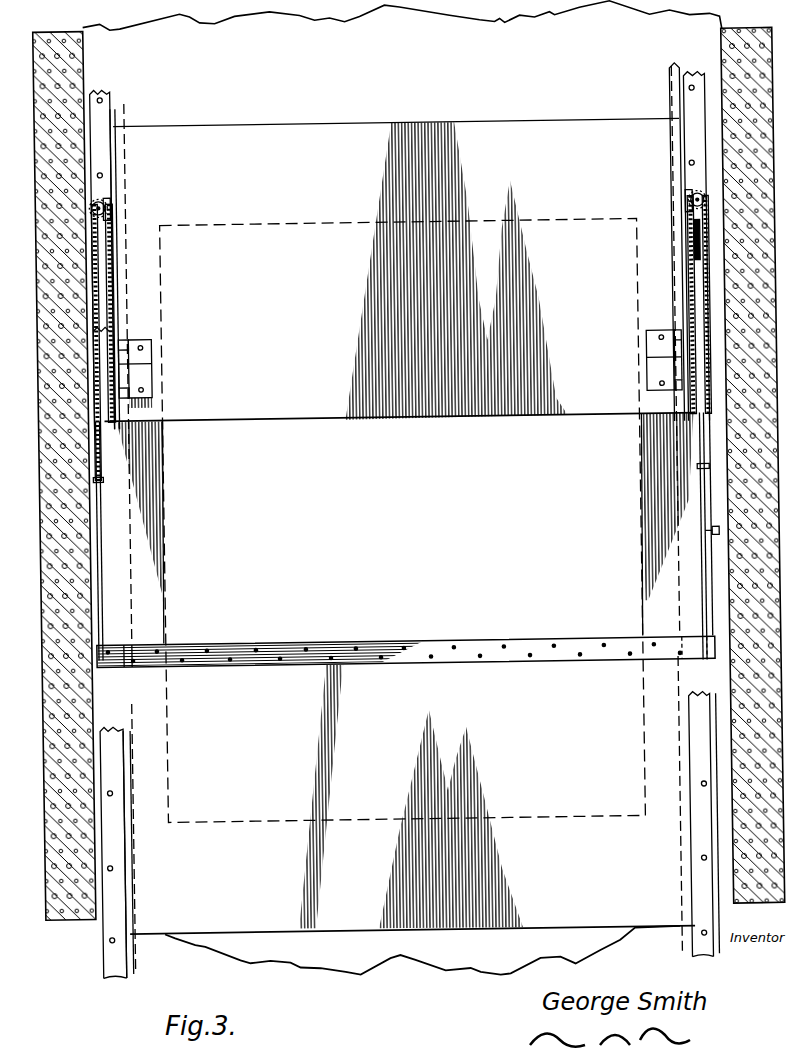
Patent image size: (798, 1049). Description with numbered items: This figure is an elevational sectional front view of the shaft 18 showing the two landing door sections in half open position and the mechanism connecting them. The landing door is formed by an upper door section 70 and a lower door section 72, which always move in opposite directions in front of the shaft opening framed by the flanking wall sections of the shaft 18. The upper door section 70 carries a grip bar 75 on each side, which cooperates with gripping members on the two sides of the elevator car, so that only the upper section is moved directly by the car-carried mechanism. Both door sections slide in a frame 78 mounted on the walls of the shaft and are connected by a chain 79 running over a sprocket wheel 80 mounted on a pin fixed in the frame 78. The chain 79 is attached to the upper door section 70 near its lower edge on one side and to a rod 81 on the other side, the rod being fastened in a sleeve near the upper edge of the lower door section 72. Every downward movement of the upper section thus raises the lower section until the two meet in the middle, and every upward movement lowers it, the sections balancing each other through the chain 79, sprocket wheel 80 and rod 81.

The shaft 18 is at (70, 912).
The upper door section 70 is at (271, 398).
The lower door section 72 is at (248, 672).
The grip bar 75 is at (131, 364).
The frame 78 is at (103, 116).
The chain 79 is at (113, 272).
The sprocket wheel 80 is at (104, 208).
The rod 81 is at (98, 526).